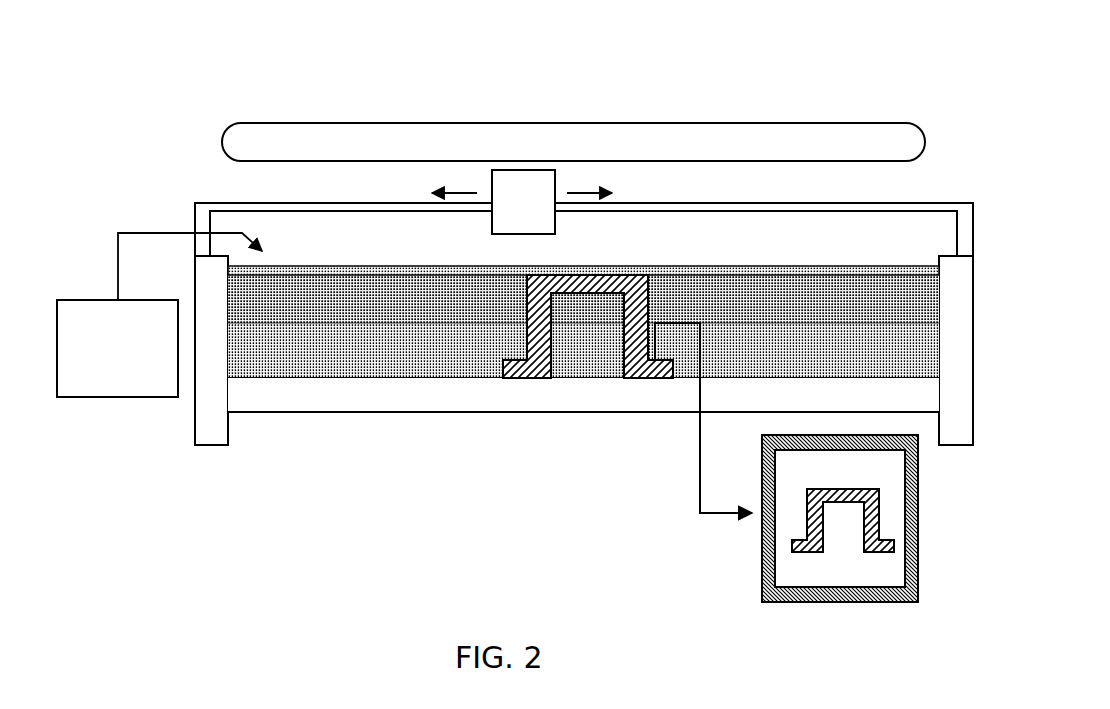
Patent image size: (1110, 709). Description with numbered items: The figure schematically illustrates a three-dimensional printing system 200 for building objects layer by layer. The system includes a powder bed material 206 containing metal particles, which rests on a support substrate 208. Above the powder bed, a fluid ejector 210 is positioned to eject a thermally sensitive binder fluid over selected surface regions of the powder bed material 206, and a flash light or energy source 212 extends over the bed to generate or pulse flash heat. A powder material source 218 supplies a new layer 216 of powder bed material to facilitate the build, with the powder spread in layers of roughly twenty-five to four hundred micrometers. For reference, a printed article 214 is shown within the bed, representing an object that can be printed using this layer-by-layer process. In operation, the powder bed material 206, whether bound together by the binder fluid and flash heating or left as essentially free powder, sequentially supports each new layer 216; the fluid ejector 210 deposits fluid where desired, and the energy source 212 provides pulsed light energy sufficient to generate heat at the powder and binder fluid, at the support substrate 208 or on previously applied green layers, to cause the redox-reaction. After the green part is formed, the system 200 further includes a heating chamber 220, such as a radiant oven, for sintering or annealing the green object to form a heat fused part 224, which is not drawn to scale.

The three-dimensional printing system 200 is at (214, 74).
The flash light or energy source 212 is at (591, 152).
The fluid ejector 210 is at (542, 216).
The powder material source 218 is at (136, 359).
The new layer of powder bed material 216 is at (470, 272).
The printed article 214 is at (635, 282).
The powder bed material 206 is at (413, 357).
The support substrate 208 is at (483, 395).
The heating chamber 220 is at (767, 575).
The heat fused part 224 is at (812, 517).